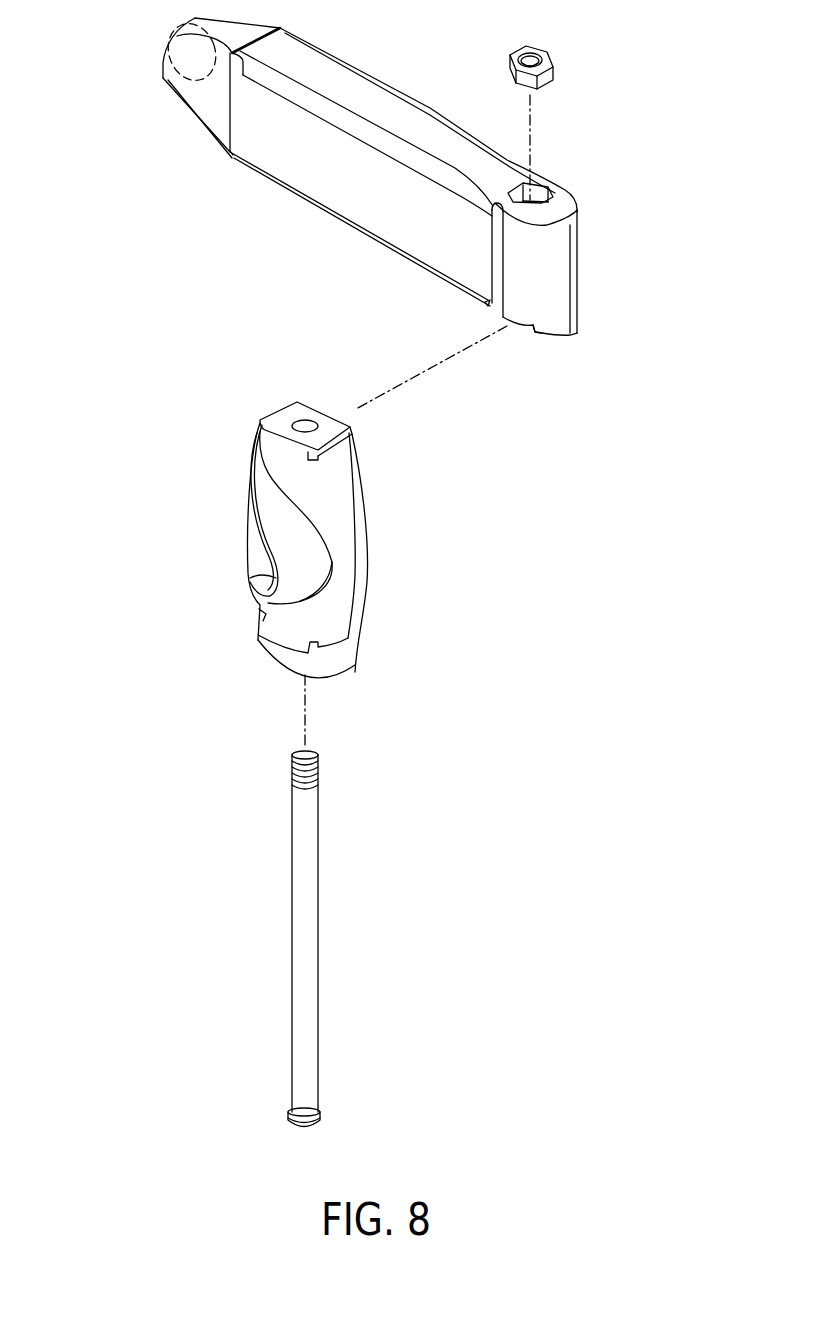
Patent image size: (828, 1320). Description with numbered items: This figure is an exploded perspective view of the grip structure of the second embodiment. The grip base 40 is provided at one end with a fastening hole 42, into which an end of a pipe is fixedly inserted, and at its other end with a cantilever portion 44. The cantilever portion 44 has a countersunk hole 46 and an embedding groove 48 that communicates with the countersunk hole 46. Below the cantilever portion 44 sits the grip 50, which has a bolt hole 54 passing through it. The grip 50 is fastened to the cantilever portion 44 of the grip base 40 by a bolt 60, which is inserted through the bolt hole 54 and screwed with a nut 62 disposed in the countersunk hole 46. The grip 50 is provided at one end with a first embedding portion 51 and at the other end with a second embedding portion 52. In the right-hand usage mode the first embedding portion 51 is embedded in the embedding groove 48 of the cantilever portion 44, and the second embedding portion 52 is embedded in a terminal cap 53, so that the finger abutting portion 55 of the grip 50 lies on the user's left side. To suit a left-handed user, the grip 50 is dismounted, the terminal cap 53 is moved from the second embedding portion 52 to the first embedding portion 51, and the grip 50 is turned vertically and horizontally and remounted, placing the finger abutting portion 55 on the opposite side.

The grip base 40 is at (268, 185).
The fastening hole 42 is at (175, 70).
The cantilever portion 44 is at (557, 278).
The countersunk hole 46 is at (538, 190).
The embedding groove 48 is at (521, 324).
The grip 50 is at (382, 547).
The first embedding portion 51 is at (293, 438).
The second embedding portion 52 is at (285, 633).
The terminal cap 53 is at (283, 652).
The bolt hole 54 is at (305, 421).
The finger abutting portion 55 is at (305, 558).
The bolt 60 is at (308, 947).
The nut 62 is at (547, 70).